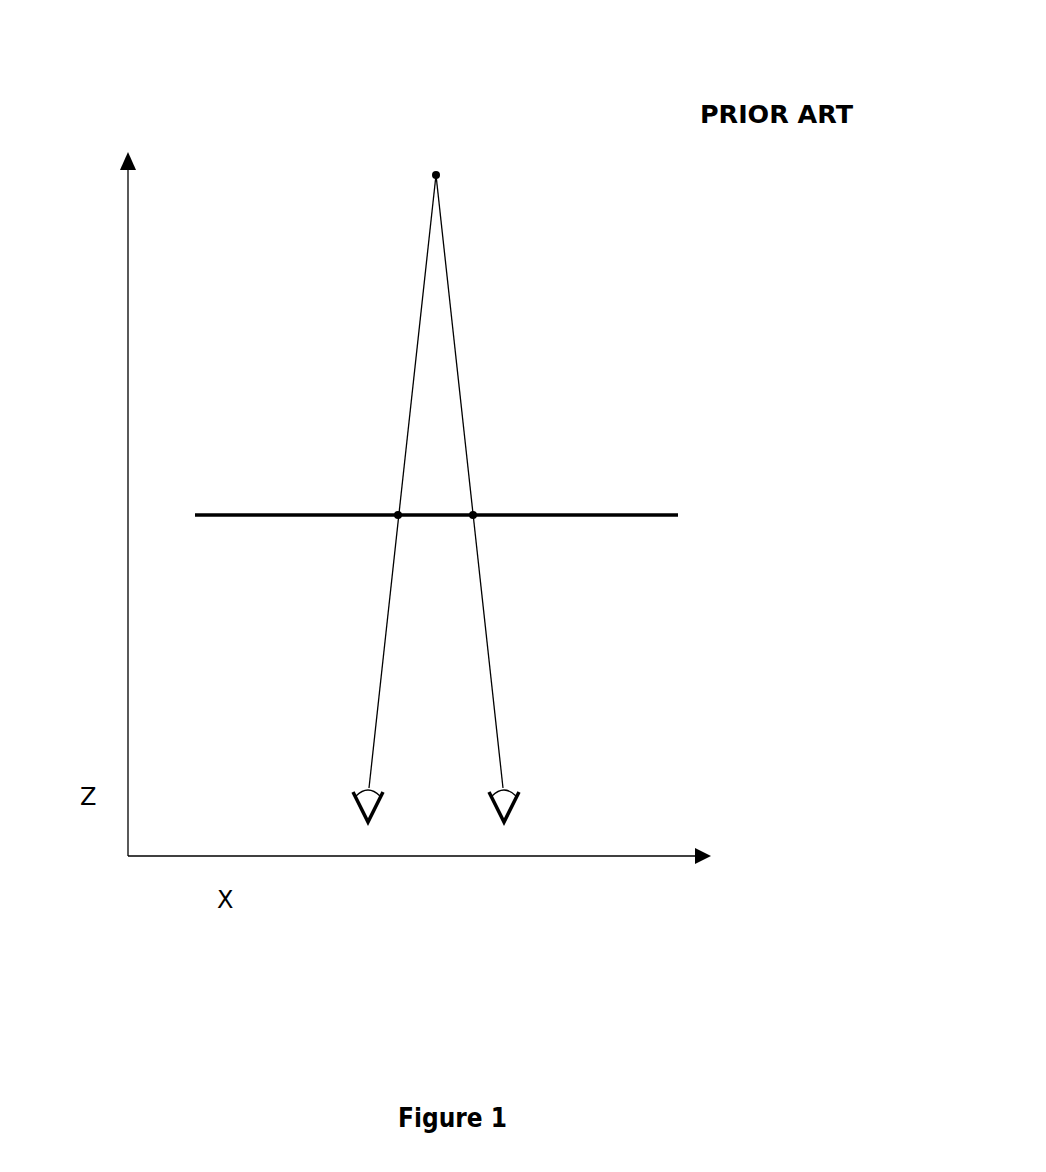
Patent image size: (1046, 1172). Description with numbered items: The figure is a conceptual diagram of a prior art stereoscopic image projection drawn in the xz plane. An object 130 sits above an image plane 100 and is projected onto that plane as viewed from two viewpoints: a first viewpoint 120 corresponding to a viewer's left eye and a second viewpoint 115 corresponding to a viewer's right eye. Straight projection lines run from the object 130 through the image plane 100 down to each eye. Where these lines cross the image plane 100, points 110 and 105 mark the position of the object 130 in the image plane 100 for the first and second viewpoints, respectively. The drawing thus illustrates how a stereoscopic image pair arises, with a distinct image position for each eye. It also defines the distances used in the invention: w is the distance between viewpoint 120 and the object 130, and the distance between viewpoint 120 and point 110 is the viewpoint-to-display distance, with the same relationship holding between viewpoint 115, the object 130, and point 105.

The image plane 100 is at (644, 515).
The point 105 is at (475, 513).
The point 110 is at (397, 513).
The second viewpoint 115 is at (518, 796).
The first viewpoint 120 is at (355, 796).
The object 130 is at (436, 175).